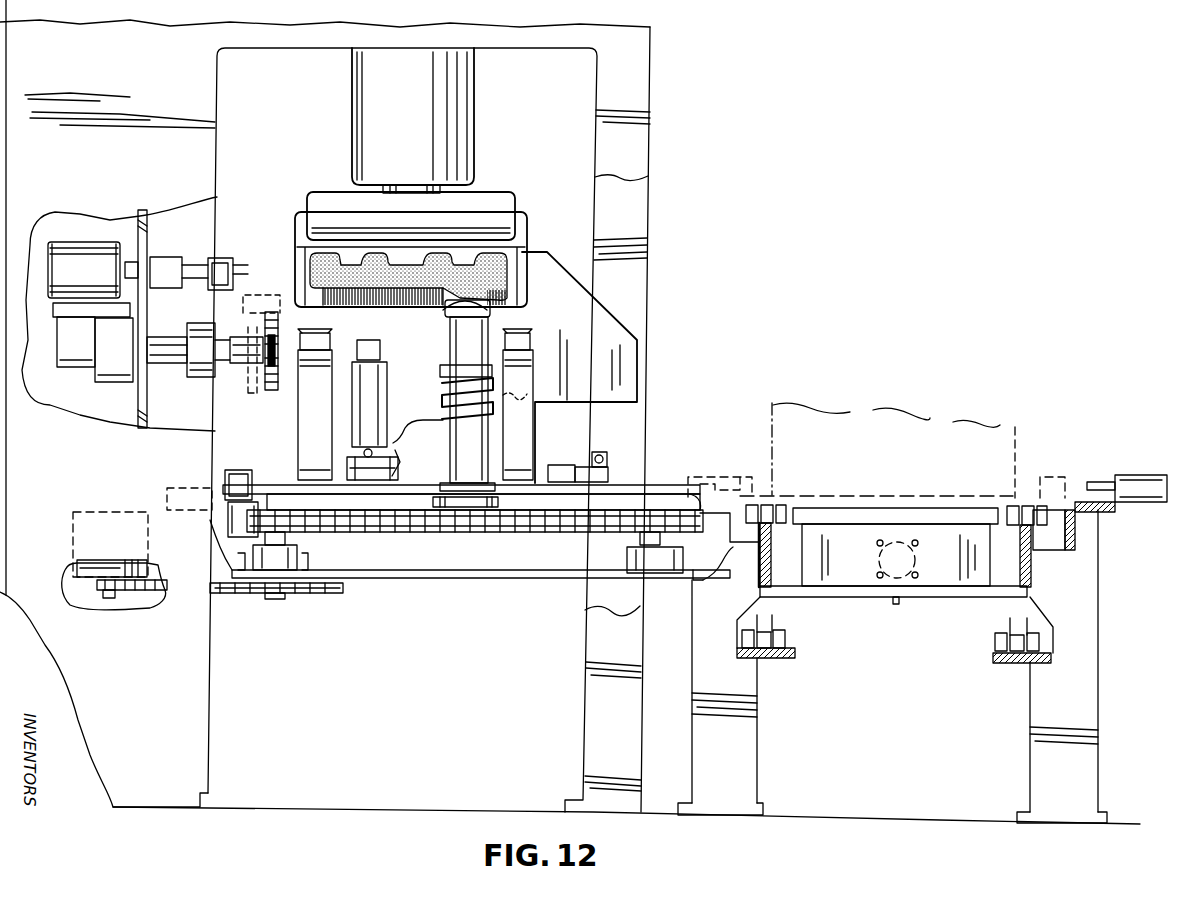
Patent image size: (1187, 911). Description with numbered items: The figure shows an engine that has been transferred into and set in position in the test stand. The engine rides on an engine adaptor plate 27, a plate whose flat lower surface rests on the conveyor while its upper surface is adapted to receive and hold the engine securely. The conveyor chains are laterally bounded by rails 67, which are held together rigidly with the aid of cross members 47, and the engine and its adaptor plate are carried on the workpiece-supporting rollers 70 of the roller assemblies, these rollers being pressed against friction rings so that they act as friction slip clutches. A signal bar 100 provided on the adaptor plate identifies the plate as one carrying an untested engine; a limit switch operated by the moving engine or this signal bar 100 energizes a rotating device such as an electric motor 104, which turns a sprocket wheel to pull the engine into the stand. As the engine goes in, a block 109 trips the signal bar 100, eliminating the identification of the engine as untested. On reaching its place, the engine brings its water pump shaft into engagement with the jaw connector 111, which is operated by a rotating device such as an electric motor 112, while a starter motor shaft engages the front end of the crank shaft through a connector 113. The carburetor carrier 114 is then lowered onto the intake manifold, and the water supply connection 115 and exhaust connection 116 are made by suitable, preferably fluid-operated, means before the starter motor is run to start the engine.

The engine adaptor plate 27 is at (1013, 467).
The cross member 47 is at (935, 582).
The rail 67 is at (761, 575).
The workpiece-supporting roller 70 is at (742, 636).
The signal bar 100 is at (572, 467).
The electric motor 104 is at (80, 533).
The block 109 is at (601, 452).
The jaw connector 111 is at (227, 258).
The electric motor 112 is at (87, 248).
The connector 113 is at (239, 365).
The carburetor carrier 114 is at (352, 103).
The water supply connection 115 is at (305, 422).
The exhaust connection 116 is at (498, 327).